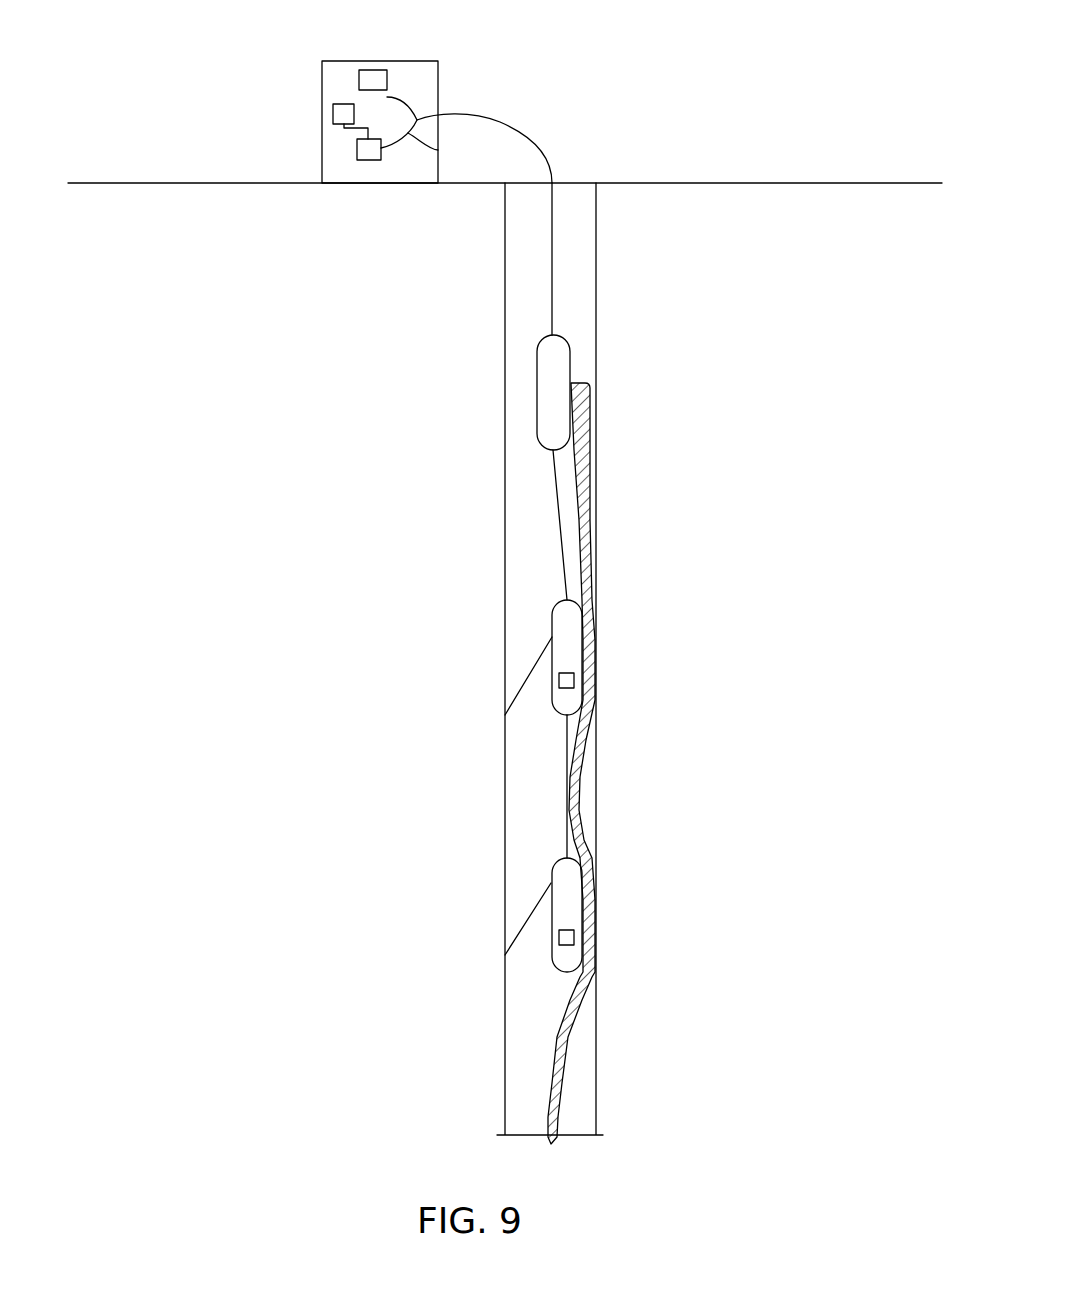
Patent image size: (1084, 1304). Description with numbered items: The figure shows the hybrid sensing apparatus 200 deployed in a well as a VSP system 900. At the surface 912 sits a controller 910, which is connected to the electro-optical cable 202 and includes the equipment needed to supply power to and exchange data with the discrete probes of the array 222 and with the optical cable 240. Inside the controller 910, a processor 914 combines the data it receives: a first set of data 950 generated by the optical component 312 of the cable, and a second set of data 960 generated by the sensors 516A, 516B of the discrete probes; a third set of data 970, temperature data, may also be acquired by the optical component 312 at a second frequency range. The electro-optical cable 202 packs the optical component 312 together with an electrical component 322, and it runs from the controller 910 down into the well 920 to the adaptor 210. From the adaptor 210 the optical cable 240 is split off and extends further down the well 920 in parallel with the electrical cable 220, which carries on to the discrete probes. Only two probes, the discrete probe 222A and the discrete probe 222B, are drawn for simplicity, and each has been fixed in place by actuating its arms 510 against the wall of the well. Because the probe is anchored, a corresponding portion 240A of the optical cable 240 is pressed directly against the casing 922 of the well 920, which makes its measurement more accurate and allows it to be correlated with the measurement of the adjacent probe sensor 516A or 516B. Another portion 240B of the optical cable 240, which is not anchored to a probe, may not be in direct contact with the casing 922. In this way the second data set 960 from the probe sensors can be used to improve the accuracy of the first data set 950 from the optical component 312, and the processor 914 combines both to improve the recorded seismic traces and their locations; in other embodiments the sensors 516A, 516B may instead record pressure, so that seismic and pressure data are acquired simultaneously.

The VSP system 900 is at (702, 52).
The controller 910 is at (376, 58).
The surface 912 is at (131, 181).
The processor 914 is at (333, 114).
The first set of data 950 is at (387, 91).
The second set of data 960 is at (357, 150).
The third set of data 970 is at (359, 82).
The optical component 312 is at (407, 103).
The electrical component 322 is at (505, 123).
The electro-optical cable 202 is at (552, 240).
The adaptor 210 is at (553, 392).
The electrical cable 220 is at (558, 508).
The hybrid sensing apparatus 200 is at (313, 245).
The array 222 is at (137, 797).
The discrete probe 222A is at (560, 630).
The discrete probe 222B is at (563, 872).
The arms 510 is at (528, 672).
The sensor 516A is at (574, 680).
The sensor 516B is at (574, 937).
The optical cable 240 is at (583, 780).
The portion of the optical cable 240A is at (596, 632).
The portion of the optical cable 240B is at (597, 550).
The well 920 is at (572, 287).
The casing 922 is at (597, 522).